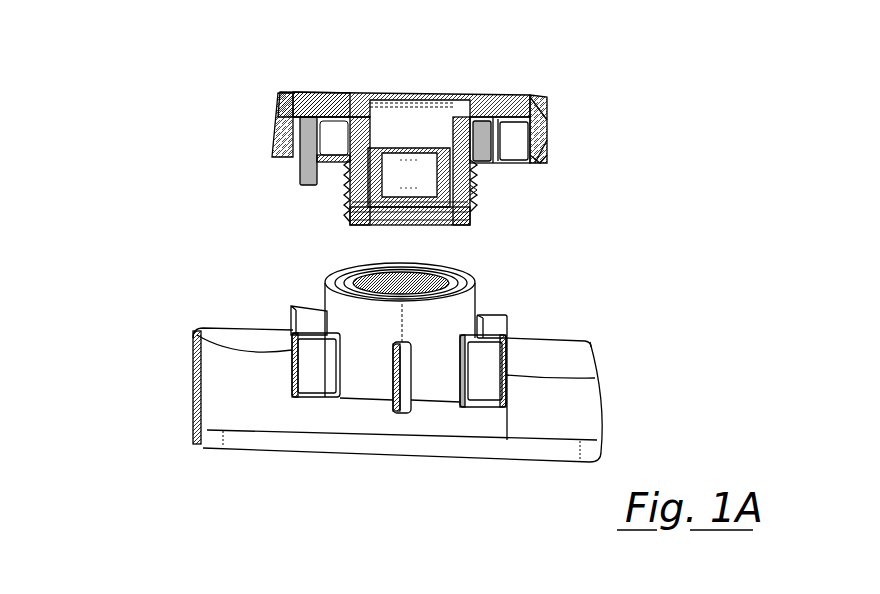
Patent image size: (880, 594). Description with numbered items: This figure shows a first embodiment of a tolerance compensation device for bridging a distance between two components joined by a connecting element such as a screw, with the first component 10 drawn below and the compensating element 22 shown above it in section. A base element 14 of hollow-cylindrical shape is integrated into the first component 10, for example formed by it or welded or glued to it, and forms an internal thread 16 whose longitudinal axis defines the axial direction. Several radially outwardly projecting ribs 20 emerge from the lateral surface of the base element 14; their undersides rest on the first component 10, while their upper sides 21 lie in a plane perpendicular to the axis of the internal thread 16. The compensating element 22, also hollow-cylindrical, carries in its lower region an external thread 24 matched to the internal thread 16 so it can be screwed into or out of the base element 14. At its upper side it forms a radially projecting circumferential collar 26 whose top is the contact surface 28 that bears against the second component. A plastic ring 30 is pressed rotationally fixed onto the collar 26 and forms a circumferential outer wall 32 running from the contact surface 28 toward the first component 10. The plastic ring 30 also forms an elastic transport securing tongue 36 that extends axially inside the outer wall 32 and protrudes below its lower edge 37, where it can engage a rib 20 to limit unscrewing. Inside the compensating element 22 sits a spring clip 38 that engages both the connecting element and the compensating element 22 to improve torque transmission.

The first component 10 is at (212, 395).
The base element 14 is at (478, 293).
The internal thread 16 is at (343, 263).
The ribs 20 is at (205, 352).
The upper sides of the ribs 21 is at (487, 313).
The compensating element 22 is at (243, 105).
The external thread 24 is at (473, 193).
The collar 26 is at (322, 102).
The contact surface 28 is at (338, 93).
The plastic ring 30 is at (543, 100).
The outer wall 32 is at (541, 148).
The transport securing tongue 36 is at (313, 183).
The lower edge 37 is at (539, 160).
The spring clip 38 is at (437, 184).